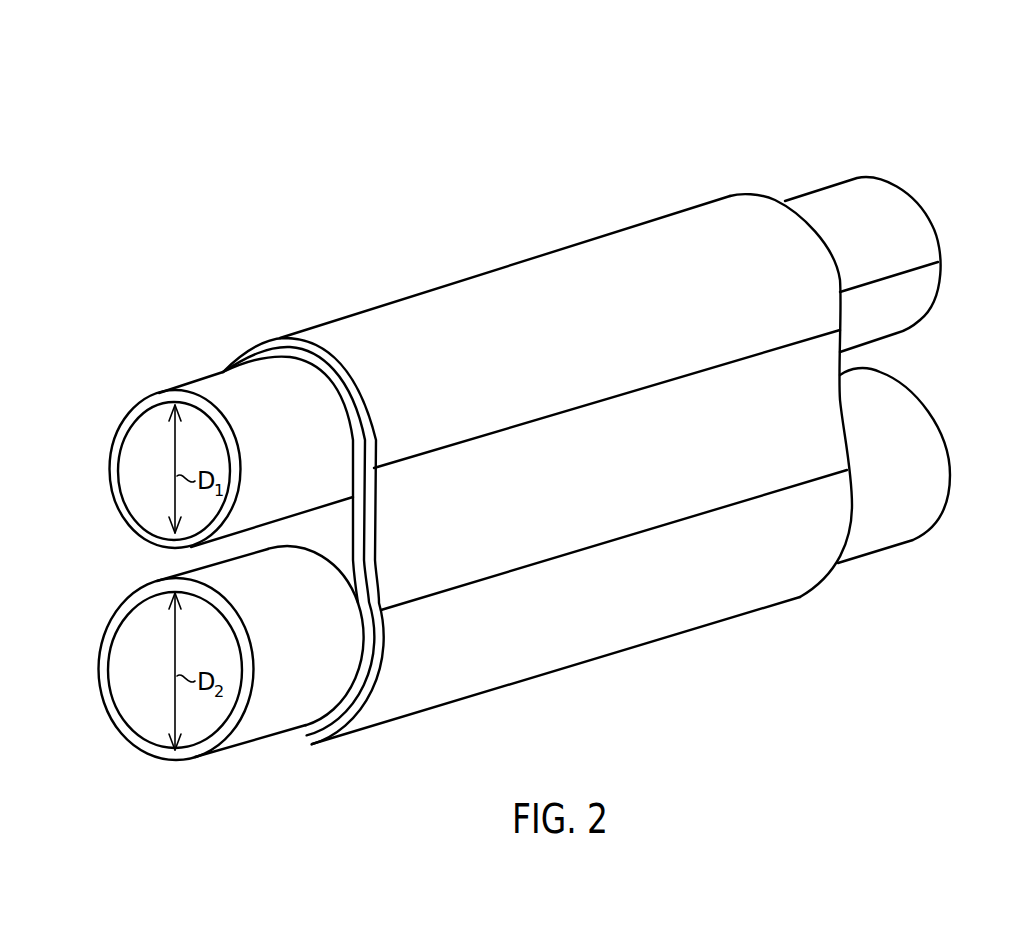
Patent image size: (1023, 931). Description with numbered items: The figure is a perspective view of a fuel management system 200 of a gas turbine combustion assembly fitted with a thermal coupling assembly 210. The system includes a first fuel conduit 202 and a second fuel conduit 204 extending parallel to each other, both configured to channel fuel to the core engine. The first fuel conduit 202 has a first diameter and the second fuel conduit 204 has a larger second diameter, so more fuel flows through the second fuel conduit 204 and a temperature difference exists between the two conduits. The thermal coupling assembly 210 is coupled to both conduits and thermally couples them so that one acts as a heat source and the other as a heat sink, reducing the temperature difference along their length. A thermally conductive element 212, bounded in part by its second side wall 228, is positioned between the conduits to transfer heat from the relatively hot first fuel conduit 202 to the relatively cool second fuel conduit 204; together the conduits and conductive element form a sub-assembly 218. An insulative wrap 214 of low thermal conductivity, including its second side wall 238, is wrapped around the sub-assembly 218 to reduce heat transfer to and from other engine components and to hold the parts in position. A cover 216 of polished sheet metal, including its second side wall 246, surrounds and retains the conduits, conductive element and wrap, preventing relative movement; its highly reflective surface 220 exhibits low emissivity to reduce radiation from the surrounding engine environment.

The fuel management system 200 is at (883, 118).
The first fuel conduit 202 is at (920, 227).
The second fuel conduit 204 is at (930, 428).
The thermal coupling assembly 210 is at (602, 228).
The thermally conductive element 212 is at (335, 548).
The insulative wrap 214 is at (358, 520).
The cover 216 is at (428, 317).
The sub-assembly 218 is at (172, 557).
The highly reflective surface 220 is at (672, 327).
The second side wall 228 is at (348, 520).
The second side wall 238 is at (355, 502).
The second side wall 246 is at (672, 485).